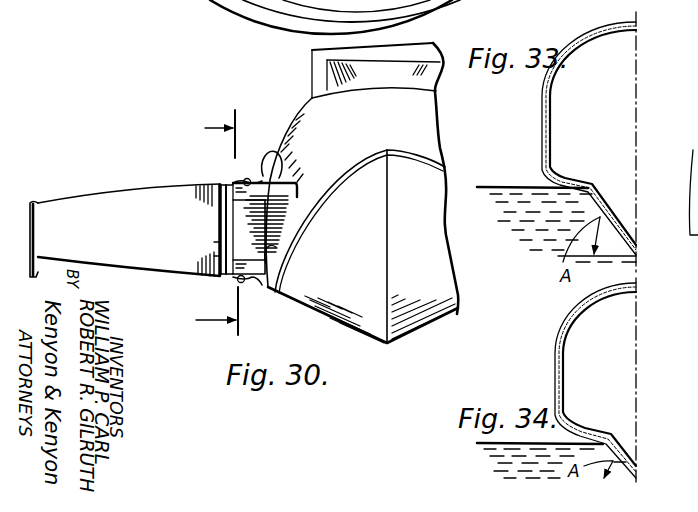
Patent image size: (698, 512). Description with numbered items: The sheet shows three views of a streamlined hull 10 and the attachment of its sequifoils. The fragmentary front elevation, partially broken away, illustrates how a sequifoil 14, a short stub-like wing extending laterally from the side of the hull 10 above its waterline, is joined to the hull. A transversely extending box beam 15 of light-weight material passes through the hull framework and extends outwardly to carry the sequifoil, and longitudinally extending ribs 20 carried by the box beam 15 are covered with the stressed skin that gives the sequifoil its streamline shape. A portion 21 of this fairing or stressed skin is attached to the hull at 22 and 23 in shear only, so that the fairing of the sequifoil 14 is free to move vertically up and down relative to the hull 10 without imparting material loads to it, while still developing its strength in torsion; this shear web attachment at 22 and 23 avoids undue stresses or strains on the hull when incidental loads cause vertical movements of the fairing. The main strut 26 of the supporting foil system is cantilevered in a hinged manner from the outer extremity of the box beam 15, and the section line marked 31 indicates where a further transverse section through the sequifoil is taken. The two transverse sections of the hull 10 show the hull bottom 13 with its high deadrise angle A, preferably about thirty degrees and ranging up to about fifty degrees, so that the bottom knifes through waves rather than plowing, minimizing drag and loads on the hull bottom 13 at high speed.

In FIG. 30, the hull 10 is at (322, 128).
In FIG. 33, the hull 10 is at (572, 127).
In FIG. 34, the hull 10 is at (588, 340).
In FIG. 33, the hull bottom 13 is at (603, 222).
In FIG. 34, the hull bottom 13 is at (624, 461).
In FIG. 30, the sequifoil 14 is at (133, 198).
In FIG. 30, the box beam 15 is at (246, 231).
In FIG. 30, the rib 20 is at (216, 246).
In FIG. 30, the fairing portion 21 is at (233, 184).
In FIG. 30, the shear attachment 22 is at (277, 156).
In FIG. 30, the shear attachment 23 is at (276, 247).
In FIG. 30, the main strut 26 is at (28, 207).
In FIG. 30, the section line 31- 31 is at (231, 222).